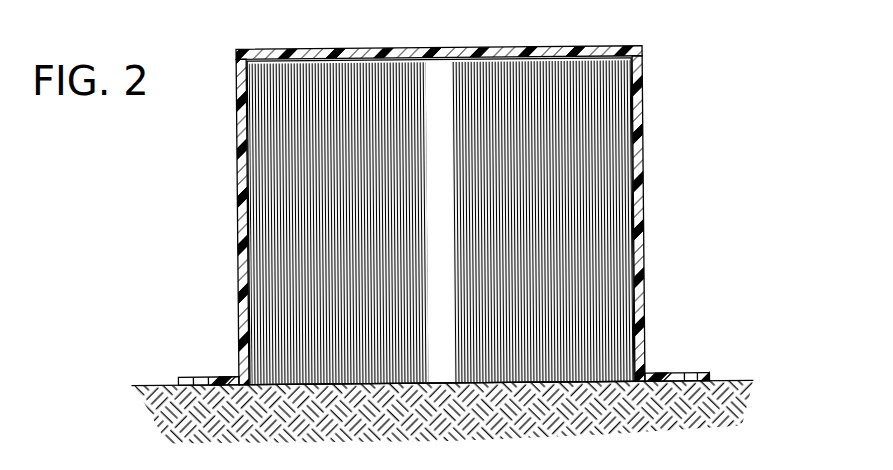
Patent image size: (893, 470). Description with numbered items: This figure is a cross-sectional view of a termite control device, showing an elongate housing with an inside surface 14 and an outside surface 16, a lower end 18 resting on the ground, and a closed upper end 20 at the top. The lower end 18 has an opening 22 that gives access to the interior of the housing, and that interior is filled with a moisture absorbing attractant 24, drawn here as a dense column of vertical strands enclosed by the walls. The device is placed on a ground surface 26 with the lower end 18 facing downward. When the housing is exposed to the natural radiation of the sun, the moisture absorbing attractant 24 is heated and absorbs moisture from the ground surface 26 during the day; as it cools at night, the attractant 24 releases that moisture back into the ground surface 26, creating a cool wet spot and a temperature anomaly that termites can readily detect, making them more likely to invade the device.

The inside surface 14 is at (260, 181).
The outside surface 16 is at (236, 88).
The lower end 18 is at (643, 325).
The closed upper end 20 is at (413, 47).
The opening 22 is at (615, 382).
The moisture absorbing attractant 24 is at (316, 268).
The ground surface 26 is at (159, 386).